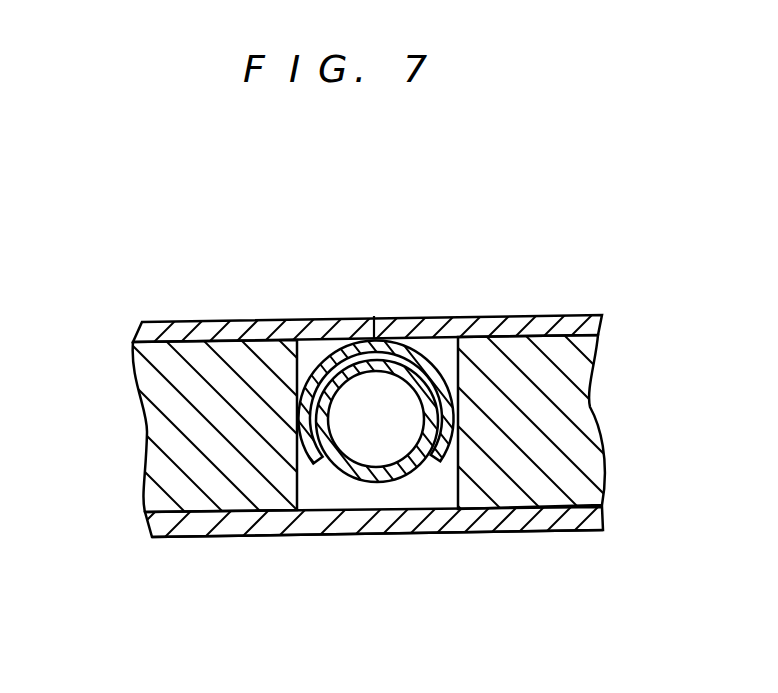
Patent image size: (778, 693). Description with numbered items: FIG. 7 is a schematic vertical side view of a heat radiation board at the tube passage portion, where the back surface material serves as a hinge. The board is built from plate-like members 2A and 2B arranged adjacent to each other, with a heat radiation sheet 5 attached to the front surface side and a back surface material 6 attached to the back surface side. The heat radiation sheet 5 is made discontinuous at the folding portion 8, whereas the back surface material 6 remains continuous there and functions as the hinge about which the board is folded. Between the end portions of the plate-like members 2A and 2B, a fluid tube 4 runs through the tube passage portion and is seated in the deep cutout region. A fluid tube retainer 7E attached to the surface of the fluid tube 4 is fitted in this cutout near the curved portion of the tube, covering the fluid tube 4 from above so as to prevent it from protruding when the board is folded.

The heat radiation sheet 5 is at (217, 327).
The back surface material 6 is at (493, 520).
The folding portion 8 is at (382, 542).
The plate-like member 2A is at (155, 440).
The plate-like member 2B is at (570, 402).
The fluid tube 4 is at (349, 368).
The fluid tube retainer 7E is at (422, 348).